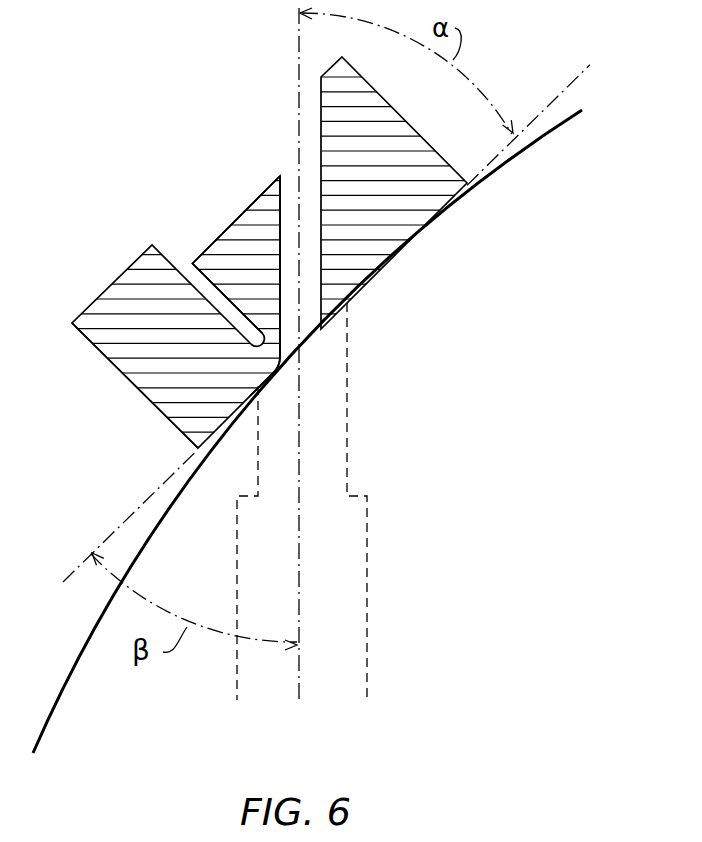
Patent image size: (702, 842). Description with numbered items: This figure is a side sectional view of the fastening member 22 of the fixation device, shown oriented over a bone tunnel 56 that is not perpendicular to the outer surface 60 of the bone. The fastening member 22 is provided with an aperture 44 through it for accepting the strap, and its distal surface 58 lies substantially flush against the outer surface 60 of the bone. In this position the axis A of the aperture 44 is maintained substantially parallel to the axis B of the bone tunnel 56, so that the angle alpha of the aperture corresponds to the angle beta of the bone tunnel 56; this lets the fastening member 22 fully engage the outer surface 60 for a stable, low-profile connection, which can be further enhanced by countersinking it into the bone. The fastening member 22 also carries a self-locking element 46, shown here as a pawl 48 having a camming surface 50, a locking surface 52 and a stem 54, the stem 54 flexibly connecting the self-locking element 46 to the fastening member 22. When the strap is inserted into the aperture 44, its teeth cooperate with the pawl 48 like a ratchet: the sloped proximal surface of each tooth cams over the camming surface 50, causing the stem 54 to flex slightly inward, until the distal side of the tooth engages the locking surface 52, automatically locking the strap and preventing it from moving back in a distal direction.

The fastening member 22 is at (103, 355).
The aperture 44 is at (302, 343).
The self-locking element 46 is at (167, 148).
The pawl 48 is at (227, 250).
The camming surface 50 is at (284, 205).
The locking surface 52 is at (250, 203).
The stem 54 is at (268, 360).
The bone tunnel 56 is at (360, 575).
The distal surface 58 is at (405, 248).
The outer surface 60 is at (53, 708).